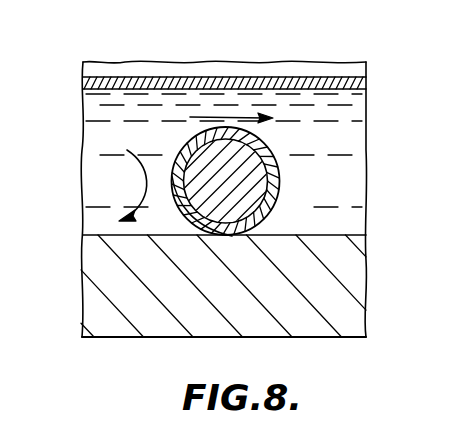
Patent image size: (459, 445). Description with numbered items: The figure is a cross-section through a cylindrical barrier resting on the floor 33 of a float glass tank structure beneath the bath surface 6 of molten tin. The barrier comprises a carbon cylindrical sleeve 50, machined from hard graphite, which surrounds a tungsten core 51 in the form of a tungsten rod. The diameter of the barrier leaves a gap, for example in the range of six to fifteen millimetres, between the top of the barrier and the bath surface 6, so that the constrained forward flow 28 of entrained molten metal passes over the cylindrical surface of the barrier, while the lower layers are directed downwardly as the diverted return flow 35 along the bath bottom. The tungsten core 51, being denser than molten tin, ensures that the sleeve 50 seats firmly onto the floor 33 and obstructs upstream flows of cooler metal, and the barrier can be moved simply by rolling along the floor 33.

The bath surface 6 is at (333, 82).
The forward flow 28 is at (230, 117).
The floor 33 is at (345, 267).
The diverted return flow 35 is at (147, 200).
The carbon cylindrical sleeve 50 is at (270, 147).
The tungsten core 51 is at (257, 180).